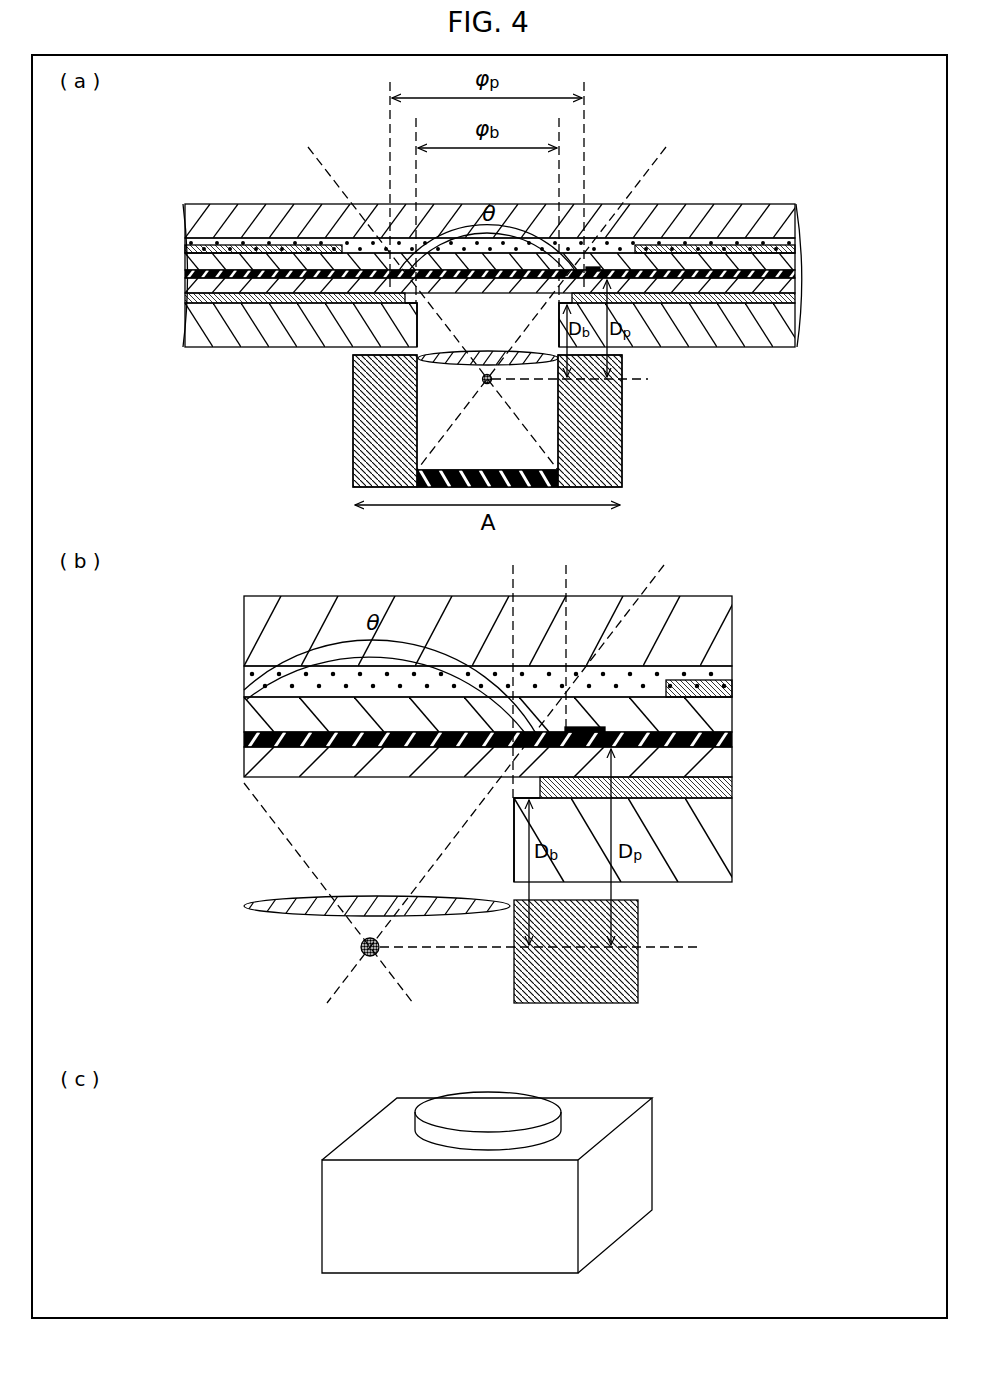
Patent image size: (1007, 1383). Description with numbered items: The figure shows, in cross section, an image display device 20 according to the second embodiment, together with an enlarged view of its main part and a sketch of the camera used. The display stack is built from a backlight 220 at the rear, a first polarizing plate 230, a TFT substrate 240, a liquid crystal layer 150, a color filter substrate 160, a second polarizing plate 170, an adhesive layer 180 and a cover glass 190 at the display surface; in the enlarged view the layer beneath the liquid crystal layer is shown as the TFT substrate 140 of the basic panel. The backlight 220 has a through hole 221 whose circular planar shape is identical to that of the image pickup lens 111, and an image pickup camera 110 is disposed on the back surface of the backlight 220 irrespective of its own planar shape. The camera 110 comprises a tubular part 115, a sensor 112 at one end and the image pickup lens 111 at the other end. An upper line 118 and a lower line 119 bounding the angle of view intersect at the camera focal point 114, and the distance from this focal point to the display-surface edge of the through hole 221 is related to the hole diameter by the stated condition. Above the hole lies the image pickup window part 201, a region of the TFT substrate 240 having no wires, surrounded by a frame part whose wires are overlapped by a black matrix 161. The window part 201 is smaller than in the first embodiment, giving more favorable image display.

The image display device 20 is at (205, 125).
The image pickup camera 110 is at (637, 447).
The image pickup lens 111 is at (488, 352).
The sensor 112 is at (522, 488).
The camera focal point 114 is at (487, 386).
The tubular part 115 is at (370, 440).
The upper line 118 is at (326, 168).
The lower line 119 is at (650, 168).
The TFT substrate 140 is at (715, 766).
The liquid crystal layer 150 is at (793, 274).
The color filter substrate 160 is at (793, 262).
The black matrix 161 is at (596, 268).
The second polarizing plate 170 is at (793, 249).
The adhesive layer 180 is at (793, 241).
The cover glass 190 is at (793, 222).
The image pickup window part 201 is at (426, 592).
The backlight 220 is at (788, 328).
The through hole 221 is at (433, 328).
The first polarizing plate 230 is at (793, 298).
The TFT substrate 240 is at (793, 285).